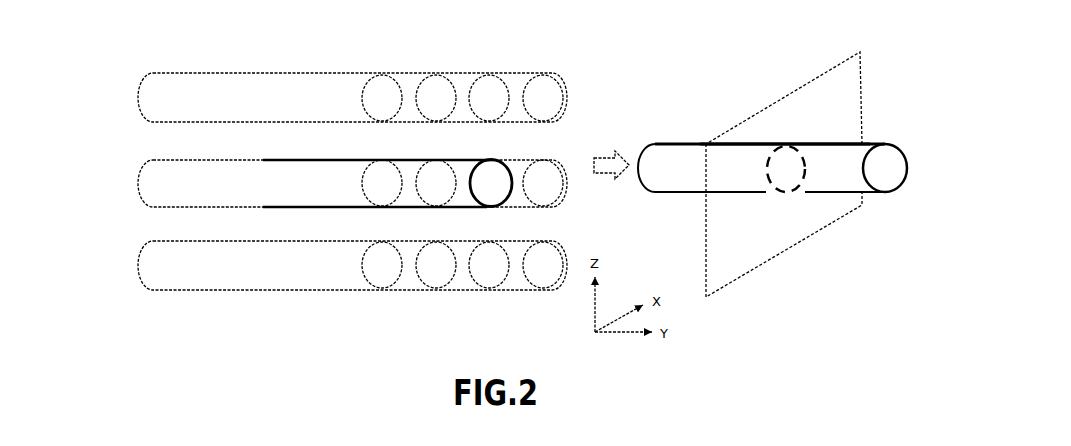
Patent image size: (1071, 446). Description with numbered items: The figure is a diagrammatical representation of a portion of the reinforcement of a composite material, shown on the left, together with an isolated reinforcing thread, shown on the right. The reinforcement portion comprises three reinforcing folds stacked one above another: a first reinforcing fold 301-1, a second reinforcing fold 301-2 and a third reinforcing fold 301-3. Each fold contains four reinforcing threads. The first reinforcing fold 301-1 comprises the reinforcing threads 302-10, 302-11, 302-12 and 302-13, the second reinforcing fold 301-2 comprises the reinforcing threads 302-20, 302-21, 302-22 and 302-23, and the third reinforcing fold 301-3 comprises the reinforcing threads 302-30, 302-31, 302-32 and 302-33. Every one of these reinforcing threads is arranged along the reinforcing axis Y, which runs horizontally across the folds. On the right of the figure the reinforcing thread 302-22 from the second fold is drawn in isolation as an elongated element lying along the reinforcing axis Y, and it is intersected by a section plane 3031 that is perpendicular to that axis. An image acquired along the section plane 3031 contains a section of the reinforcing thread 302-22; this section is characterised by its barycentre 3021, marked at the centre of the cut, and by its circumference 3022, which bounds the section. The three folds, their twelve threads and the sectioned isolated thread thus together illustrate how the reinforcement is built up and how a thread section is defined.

The first reinforcing fold 301-1 is at (136, 70).
The second reinforcing fold 301-2 is at (136, 150).
The third reinforcing fold 301-3 is at (136, 234).
The reinforcing thread 302-10 is at (382, 97).
The reinforcing thread 302-11 is at (436, 97).
The reinforcing thread 302-12 is at (485, 97).
The reinforcing thread 302-13 is at (547, 97).
The reinforcing thread 302-20 is at (382, 183).
The reinforcing thread 302-21 is at (436, 183).
The reinforcing thread 302-22 is at (493, 183).
The reinforcing thread 302-23 is at (547, 183).
The reinforcing thread 302-30 is at (382, 265).
The reinforcing thread 302-31 is at (436, 265).
The reinforcing thread 302-32 is at (487, 265).
The reinforcing thread 302-33 is at (550, 265).
The circumference 3022 is at (791, 146).
The barycentre 3021 is at (789, 168).
The section plane 3031 is at (760, 243).